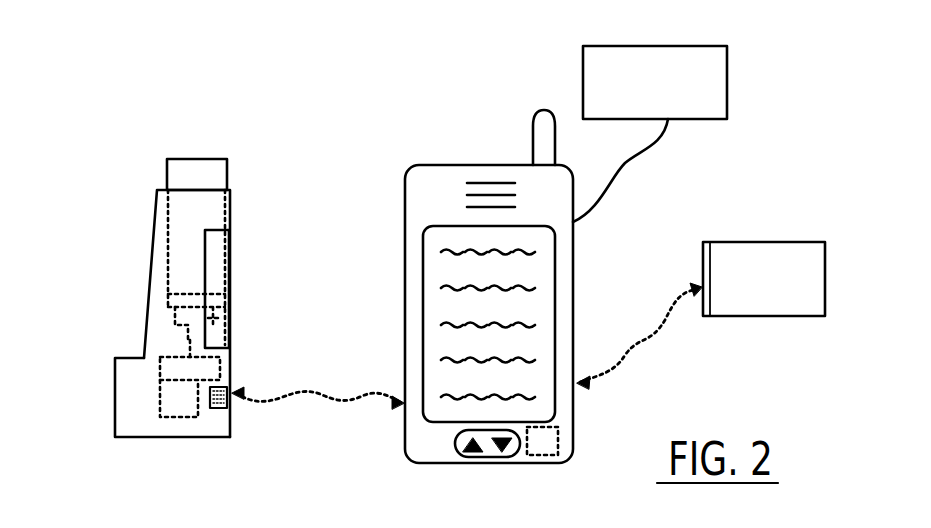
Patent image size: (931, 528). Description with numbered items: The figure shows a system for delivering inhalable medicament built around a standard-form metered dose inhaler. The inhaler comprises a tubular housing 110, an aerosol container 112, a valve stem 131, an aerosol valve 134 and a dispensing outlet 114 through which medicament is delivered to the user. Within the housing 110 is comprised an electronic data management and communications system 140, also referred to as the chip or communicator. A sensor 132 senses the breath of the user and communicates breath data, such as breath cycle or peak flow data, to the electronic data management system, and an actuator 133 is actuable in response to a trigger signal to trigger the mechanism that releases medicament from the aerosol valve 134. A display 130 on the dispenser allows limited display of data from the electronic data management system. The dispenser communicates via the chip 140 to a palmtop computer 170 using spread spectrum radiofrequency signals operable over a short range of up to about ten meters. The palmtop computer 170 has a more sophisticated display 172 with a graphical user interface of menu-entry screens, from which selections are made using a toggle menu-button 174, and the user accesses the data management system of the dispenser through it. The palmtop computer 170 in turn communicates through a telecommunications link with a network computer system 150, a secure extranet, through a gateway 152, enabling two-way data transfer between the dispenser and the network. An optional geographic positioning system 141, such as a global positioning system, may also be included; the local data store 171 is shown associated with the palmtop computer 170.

The tubular housing 110 is at (150, 283).
The aerosol container 112 is at (197, 159).
The dispensing outlet 114 is at (115, 377).
The display 130 is at (230, 248).
The valve stem 131 is at (190, 340).
The sensor 132 is at (160, 405).
The actuator 133 is at (222, 370).
The aerosol valve 134 is at (230, 316).
The electronic data management and communications system 140 is at (232, 401).
The geographic positioning system 141 is at (560, 446).
The network computer system 150 is at (778, 242).
The gateway 152 is at (706, 242).
The palmtop computer 170 is at (465, 165).
The local data store 171 is at (727, 80).
The display 172 is at (555, 252).
The toggle menu-button 174 is at (497, 457).